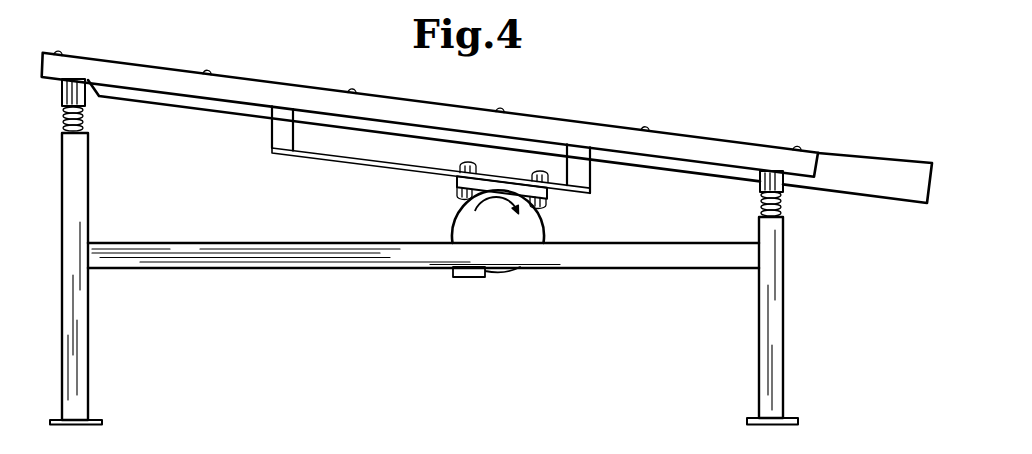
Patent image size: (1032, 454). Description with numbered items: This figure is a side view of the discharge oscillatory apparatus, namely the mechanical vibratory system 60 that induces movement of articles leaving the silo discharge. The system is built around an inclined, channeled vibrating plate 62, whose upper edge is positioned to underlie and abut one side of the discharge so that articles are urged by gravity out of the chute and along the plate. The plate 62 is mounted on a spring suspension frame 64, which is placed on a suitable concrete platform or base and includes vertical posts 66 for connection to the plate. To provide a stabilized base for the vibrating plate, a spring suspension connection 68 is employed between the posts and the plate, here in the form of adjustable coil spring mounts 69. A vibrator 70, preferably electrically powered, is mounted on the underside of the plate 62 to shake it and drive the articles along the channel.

The mechanical vibratory system 60 is at (246, 78).
The vibrating plate 62 is at (857, 180).
The spring suspension frame 64 is at (330, 263).
The vertical posts 66 is at (88, 372).
The spring suspension connection 68 is at (444, 156).
The adjustable coil spring mounts 69 is at (761, 203).
The vibrator 70 is at (544, 227).